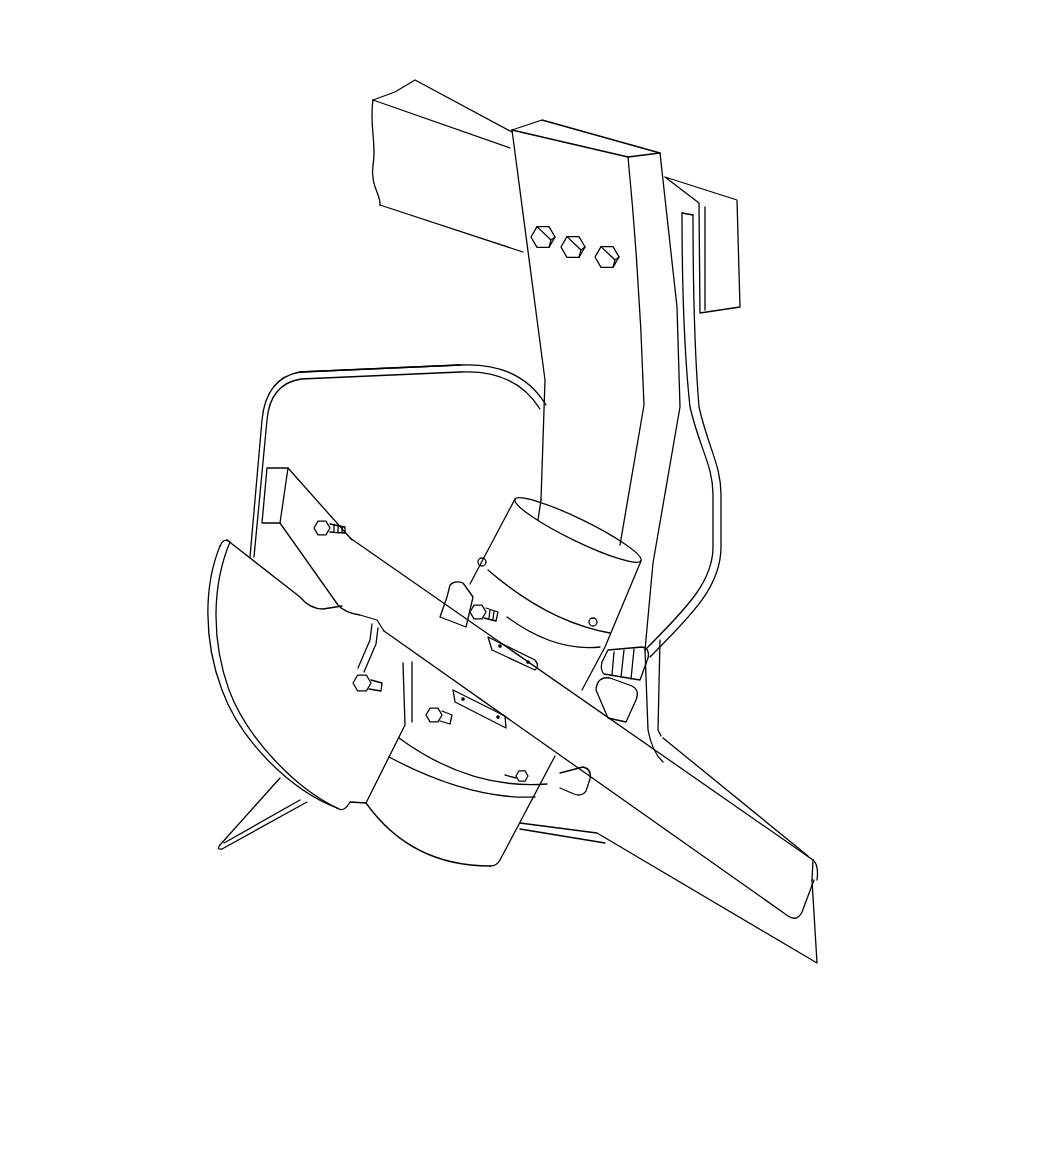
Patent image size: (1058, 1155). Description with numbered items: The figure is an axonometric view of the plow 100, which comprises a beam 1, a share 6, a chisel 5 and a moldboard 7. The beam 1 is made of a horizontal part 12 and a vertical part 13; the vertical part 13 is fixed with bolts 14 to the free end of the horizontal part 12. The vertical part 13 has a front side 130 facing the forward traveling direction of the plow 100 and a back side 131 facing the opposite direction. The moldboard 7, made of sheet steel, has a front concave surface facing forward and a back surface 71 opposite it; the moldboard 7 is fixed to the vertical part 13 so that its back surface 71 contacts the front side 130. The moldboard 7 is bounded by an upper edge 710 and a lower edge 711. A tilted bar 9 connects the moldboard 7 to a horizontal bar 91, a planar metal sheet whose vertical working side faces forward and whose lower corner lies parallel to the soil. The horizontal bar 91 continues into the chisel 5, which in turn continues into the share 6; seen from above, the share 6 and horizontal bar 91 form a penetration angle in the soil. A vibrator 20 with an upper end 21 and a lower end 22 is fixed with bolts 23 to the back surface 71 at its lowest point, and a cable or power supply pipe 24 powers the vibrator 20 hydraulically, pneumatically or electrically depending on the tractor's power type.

The plow 100 is at (260, 187).
The beam 1 is at (593, 118).
The horizontal part 12 is at (418, 192).
The vertical part 13 is at (620, 353).
The front side 130 is at (543, 382).
The back side 131 is at (650, 485).
The bolts 14 is at (606, 255).
The cable or power supply pipe 24 is at (703, 430).
The moldboard 7 is at (252, 430).
The upper edge 710 is at (317, 370).
The tilted bar 9 is at (312, 587).
The horizontal bar 91 is at (740, 798).
The chisel 5 is at (788, 928).
The back surface 71 is at (260, 688).
The lower edge 711 is at (335, 815).
The share 6 is at (258, 812).
The vibrator 20 is at (567, 665).
The upper end 21 is at (618, 550).
The lower end 22 is at (478, 857).
The bolts 23 is at (437, 730).